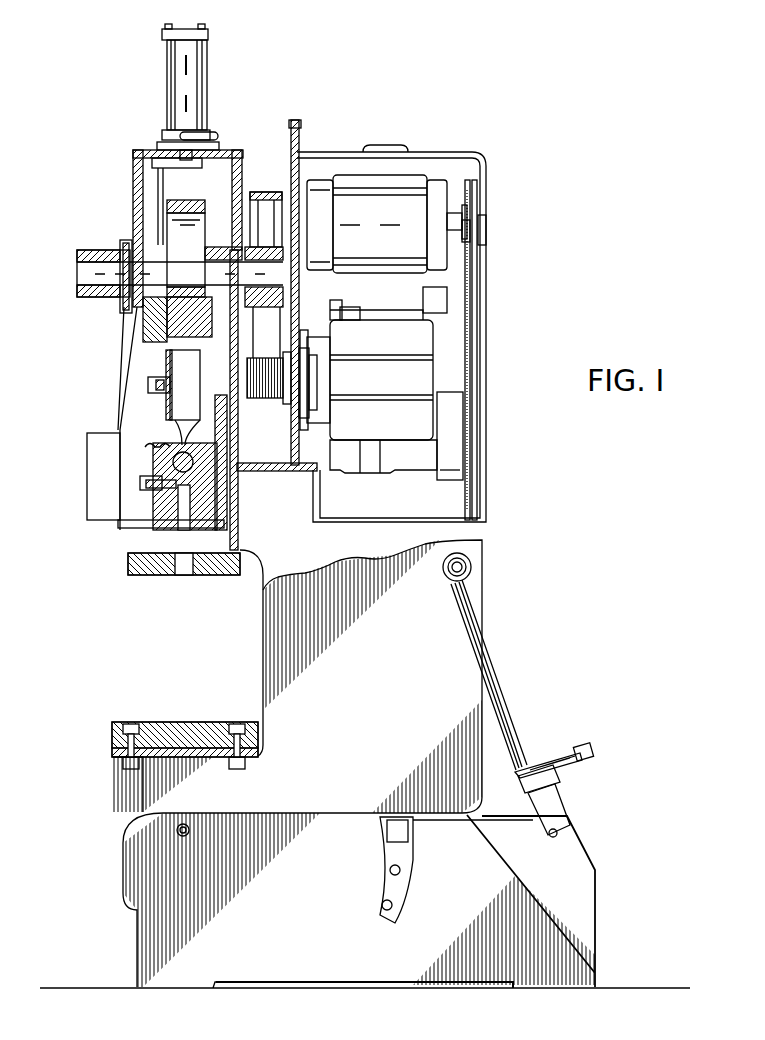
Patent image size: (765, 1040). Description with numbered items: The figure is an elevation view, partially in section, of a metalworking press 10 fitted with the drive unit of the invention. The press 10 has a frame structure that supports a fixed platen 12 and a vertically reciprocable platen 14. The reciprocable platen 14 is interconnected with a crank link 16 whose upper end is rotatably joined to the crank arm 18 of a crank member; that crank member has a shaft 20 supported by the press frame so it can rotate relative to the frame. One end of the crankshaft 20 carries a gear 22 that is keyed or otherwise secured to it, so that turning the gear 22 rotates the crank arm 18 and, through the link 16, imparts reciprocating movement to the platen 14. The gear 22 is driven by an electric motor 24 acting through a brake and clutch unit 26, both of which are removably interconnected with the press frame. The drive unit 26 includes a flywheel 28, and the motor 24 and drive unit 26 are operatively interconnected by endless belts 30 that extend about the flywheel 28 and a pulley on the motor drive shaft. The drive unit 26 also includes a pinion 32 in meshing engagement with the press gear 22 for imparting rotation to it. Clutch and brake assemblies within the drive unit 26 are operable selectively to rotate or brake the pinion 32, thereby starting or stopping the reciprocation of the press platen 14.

In FIG. 1, the metalworking press 10 is at (85, 192).
The fixed platen 12 is at (112, 723).
In FIG. 1, the vertically reciprocable platen 14 is at (137, 568).
In FIG. 1, the crank link 16 is at (175, 320).
In FIG. 1, the crank arm 18 is at (175, 233).
In FIG. 1, the crankshaft 20 is at (90, 268).
In FIG. 1, the gear 22 is at (262, 192).
In FIG. 1, the electric motor 24 is at (395, 188).
In FIG. 1, the brake and clutch unit 26 is at (457, 356).
In FIG. 1, the flywheel 28 is at (460, 470).
In FIG. 1, the endless belts 30 is at (477, 300).
In FIG. 1, the pinion 32 is at (270, 400).